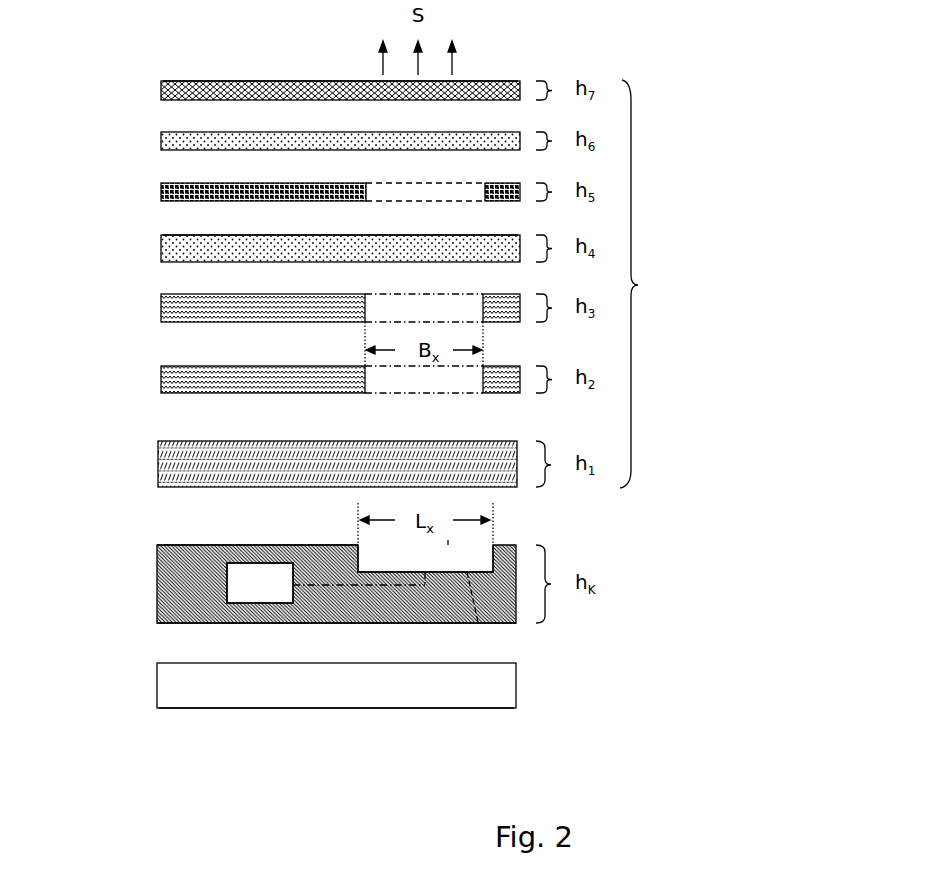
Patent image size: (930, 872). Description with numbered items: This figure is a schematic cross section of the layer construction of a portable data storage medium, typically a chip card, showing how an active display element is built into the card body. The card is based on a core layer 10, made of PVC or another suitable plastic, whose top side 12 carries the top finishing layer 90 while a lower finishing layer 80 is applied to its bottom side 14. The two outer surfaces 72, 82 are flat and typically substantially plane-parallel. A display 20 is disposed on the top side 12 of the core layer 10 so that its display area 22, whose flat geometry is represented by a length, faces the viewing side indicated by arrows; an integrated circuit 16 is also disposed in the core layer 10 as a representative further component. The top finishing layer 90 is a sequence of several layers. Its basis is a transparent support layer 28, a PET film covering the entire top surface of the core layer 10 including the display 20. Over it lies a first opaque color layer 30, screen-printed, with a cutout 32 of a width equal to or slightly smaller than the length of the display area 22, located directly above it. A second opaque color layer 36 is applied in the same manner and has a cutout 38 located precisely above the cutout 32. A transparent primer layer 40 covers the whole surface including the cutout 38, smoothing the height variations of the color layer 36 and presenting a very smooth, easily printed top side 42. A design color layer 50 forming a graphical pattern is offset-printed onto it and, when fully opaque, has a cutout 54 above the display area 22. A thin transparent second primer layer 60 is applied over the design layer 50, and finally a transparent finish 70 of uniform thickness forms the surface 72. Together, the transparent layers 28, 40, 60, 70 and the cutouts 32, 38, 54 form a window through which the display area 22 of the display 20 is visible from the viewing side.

The core layer 10 is at (324, 584).
The top side of the core layer 12 is at (176, 545).
The bottom side of carrier 14 is at (176, 623).
The integrated circuit 16 is at (219, 562).
The active display element 20 is at (480, 623).
The display area 22 is at (448, 545).
The support layer 28 is at (324, 464).
The first opaque color layer 30 is at (326, 377).
The cutout 32 is at (424, 394).
The second opaque color layer 36 is at (326, 310).
The cutout 38 is at (424, 294).
The primer layer 40 is at (326, 247).
The top side of the primer layer 42 is at (182, 235).
The design color layer 50 is at (326, 192).
The cutout 54 is at (425, 180).
The second primer layer 60 is at (326, 140).
The transparent finish 70 is at (326, 90).
The surface 72 is at (182, 81).
The lower finishing layer 80 is at (320, 685).
The surface 82 is at (176, 709).
The top finishing layer 90 is at (653, 284).